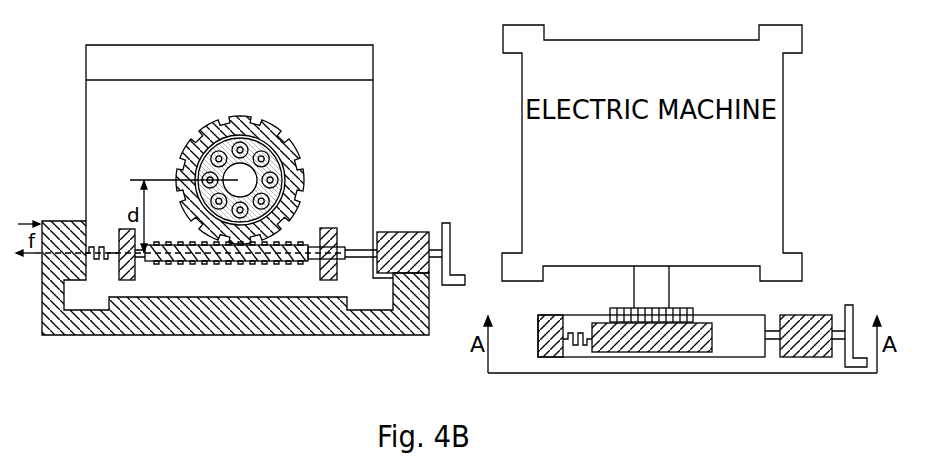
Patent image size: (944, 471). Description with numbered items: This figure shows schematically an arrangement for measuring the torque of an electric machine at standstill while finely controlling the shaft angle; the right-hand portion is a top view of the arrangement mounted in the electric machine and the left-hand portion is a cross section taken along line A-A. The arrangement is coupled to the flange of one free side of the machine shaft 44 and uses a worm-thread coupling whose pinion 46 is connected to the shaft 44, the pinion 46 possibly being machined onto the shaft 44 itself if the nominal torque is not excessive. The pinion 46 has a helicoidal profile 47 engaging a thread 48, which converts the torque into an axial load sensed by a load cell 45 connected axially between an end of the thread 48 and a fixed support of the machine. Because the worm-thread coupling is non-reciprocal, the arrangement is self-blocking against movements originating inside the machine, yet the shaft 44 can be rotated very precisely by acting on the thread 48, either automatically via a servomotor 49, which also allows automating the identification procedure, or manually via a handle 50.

The machine shaft 44 is at (192, 162).
The load cell 45 is at (98, 241).
The pinion 46 is at (243, 136).
The helicoidal profile 47 is at (280, 128).
The thread 48 is at (232, 262).
The servomotor 49 is at (391, 232).
The handle 50 is at (450, 236).